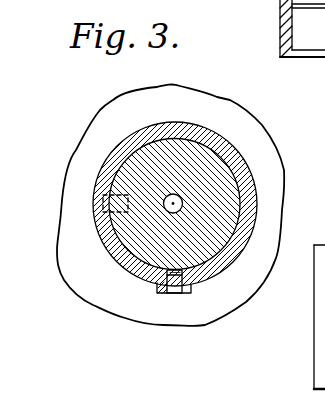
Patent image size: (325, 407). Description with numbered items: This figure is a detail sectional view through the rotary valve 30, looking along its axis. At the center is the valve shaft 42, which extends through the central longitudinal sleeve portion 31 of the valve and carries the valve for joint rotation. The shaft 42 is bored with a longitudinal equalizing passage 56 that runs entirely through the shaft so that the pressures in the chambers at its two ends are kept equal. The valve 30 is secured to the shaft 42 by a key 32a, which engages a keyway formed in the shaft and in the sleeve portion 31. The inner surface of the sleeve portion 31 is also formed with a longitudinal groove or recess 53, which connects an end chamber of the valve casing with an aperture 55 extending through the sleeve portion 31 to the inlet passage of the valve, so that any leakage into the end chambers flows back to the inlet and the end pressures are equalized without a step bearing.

The rotary valve 30 is at (257, 133).
The central longitudinal sleeve portion 31 is at (247, 190).
The key 32a is at (100, 226).
The valve shaft 42 is at (217, 158).
The longitudinal groove or recess 53 is at (158, 282).
The aperture 55 is at (177, 285).
The longitudinal equalizing passage 56 is at (173, 201).